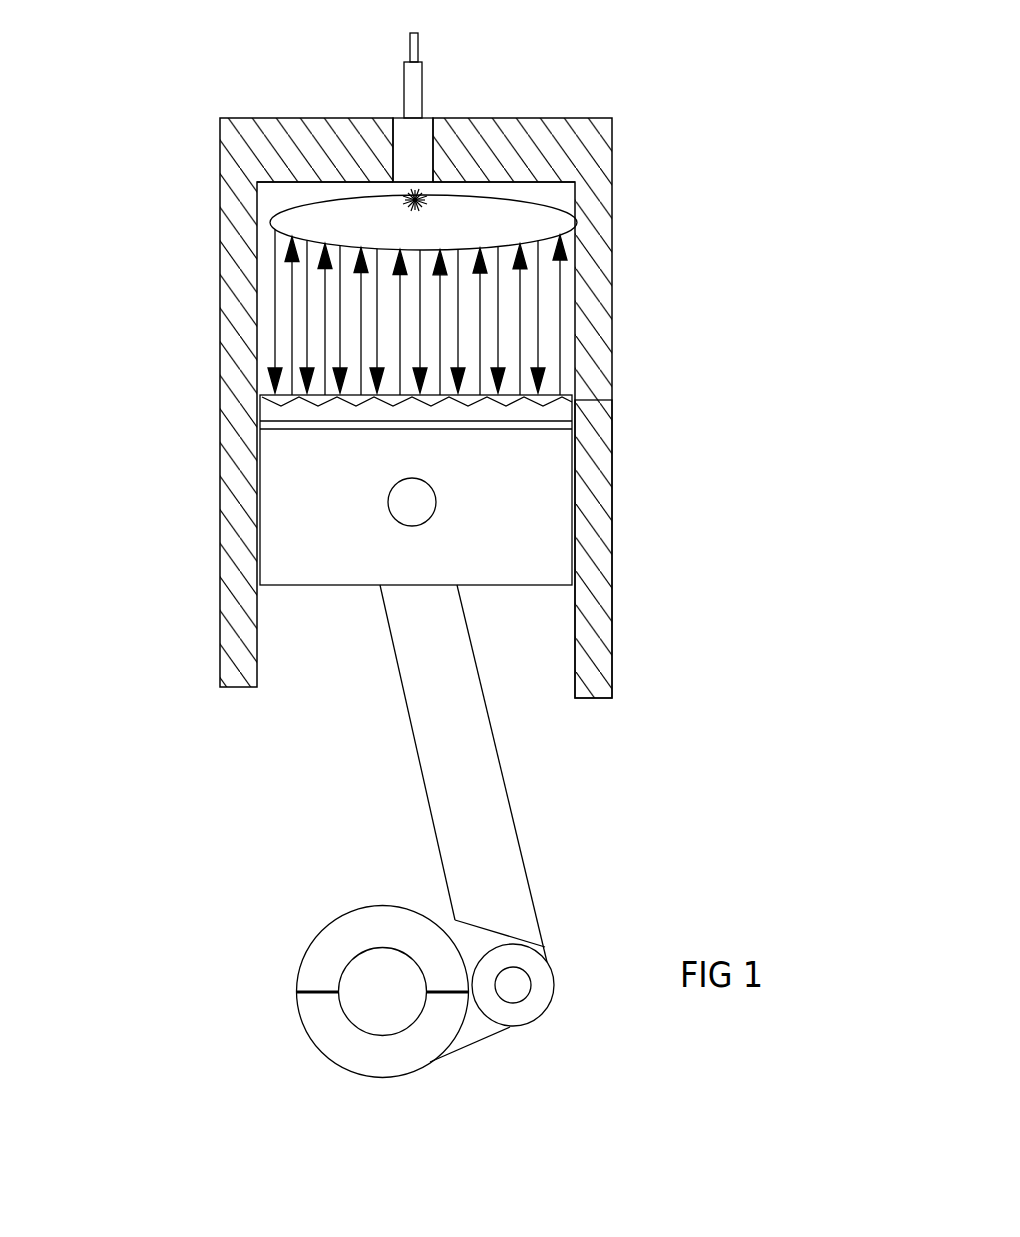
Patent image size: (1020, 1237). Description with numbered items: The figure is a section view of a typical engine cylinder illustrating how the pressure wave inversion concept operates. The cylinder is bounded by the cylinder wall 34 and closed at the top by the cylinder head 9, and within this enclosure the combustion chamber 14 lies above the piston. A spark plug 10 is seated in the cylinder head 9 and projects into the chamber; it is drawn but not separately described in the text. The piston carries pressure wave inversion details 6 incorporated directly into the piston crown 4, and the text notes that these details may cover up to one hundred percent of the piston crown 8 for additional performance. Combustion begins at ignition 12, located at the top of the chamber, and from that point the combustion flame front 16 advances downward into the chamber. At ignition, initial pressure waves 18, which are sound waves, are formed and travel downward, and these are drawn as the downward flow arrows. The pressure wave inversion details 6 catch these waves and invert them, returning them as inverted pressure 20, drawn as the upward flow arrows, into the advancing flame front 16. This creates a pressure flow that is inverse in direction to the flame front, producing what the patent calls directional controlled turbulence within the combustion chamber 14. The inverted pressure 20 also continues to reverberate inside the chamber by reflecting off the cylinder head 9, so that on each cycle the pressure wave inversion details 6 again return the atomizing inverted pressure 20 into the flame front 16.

The piston crown 4 is at (238, 378).
The pressure wave inversion details 6 is at (562, 400).
The piston crown 8 is at (522, 482).
The cylinder head 9 is at (327, 182).
The spark plug 10 is at (418, 83).
The ignition 12 is at (428, 187).
The combustion chamber 14 is at (558, 192).
The combustion flame front 16 is at (340, 232).
The initial pressure waves 18 is at (273, 302).
The inverted pressure 20 is at (560, 308).
The cylinder wall 34 is at (578, 620).